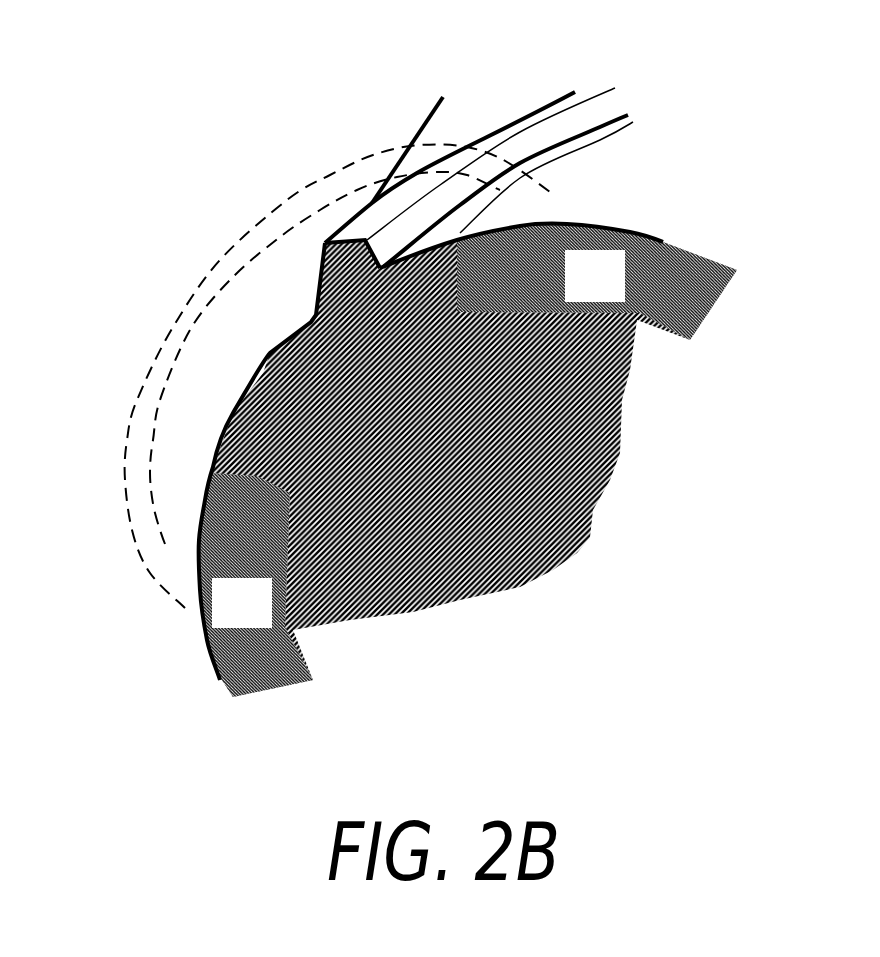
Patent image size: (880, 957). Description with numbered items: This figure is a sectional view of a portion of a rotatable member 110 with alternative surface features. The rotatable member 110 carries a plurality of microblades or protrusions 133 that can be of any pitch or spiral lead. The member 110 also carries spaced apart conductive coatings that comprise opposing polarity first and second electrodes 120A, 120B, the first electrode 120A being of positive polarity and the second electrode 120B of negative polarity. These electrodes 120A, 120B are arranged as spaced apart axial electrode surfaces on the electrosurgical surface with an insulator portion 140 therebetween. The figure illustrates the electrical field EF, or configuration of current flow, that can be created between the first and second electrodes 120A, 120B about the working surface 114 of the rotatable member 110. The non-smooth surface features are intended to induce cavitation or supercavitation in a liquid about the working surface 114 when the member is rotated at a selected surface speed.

The rotatable member 110 is at (248, 43).
The working surface 114 is at (270, 292).
The first electrode 120A is at (627, 232).
The second electrode 120B is at (217, 647).
The microblades or protrusions 133 is at (520, 115).
The insulator portion 140 is at (237, 410).
The electrical field EF is at (183, 330).